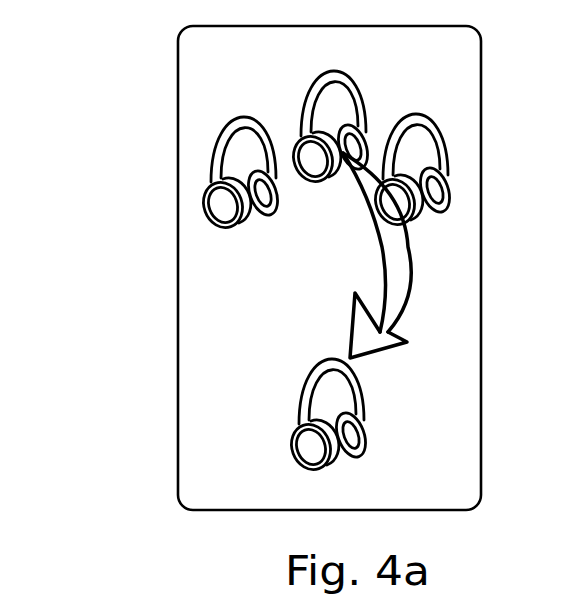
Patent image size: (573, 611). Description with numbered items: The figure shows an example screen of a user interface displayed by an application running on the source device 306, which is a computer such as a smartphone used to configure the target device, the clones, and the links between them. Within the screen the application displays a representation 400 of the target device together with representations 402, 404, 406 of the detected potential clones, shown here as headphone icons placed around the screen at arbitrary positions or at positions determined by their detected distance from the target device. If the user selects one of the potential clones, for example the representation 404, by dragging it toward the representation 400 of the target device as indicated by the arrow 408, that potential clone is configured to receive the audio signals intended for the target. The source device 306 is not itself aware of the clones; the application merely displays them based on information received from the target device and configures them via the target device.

The source device 306 is at (178, 126).
The representation of the target device 400 is at (362, 433).
The representation of a detected potential clone 402 is at (248, 120).
The representation of a detected potential clone 404 is at (358, 88).
The representation of a detected potential clone 406 is at (440, 147).
The arrow 408 is at (384, 262).